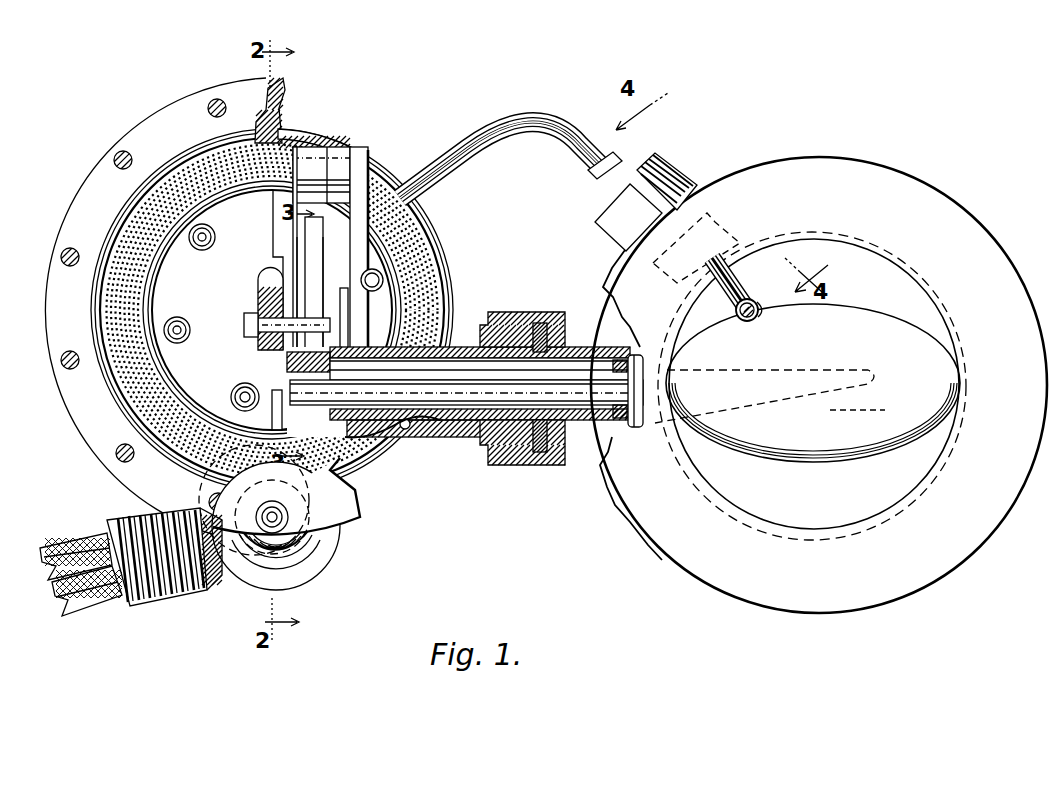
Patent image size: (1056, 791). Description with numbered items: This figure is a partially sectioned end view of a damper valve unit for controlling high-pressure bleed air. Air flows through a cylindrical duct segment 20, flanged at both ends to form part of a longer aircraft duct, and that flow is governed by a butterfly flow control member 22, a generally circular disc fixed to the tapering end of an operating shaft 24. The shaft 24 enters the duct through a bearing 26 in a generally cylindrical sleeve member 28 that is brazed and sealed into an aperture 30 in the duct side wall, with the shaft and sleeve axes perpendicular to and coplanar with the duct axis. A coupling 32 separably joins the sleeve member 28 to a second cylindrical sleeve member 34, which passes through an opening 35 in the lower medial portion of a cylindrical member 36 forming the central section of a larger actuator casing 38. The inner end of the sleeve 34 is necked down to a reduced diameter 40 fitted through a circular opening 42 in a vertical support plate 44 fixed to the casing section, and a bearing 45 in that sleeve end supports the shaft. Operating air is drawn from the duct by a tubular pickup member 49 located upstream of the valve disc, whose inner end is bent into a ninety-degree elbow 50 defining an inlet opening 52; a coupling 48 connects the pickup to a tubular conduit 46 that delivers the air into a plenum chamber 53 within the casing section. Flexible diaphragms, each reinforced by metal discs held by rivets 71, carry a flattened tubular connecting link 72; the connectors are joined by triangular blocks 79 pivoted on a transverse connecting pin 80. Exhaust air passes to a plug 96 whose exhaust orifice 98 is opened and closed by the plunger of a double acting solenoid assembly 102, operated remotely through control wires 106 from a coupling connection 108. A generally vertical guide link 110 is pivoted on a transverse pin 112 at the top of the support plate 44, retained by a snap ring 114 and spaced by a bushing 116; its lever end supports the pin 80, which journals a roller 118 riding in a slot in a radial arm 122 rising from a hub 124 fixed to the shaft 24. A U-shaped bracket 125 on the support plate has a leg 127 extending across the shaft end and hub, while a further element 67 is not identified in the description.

The cylindrical duct segment 20 is at (793, 528).
The butterfly flow control member 22 is at (917, 337).
The operating shaft 24 is at (500, 440).
The bearing 26 is at (620, 420).
The sleeve member 28 is at (618, 346).
The aperture 30 is at (686, 408).
The coupling 32 is at (549, 474).
The second cylindrical sleeve member 34 is at (466, 437).
The opening 35 is at (395, 432).
The cylindrical member 36 is at (318, 140).
The actuator casing 38 is at (466, 277).
The reduced diameter 40 is at (335, 392).
The circular opening 42 is at (362, 366).
The support plate 44 is at (362, 205).
The bearing 45 is at (406, 430).
The tubular conduit 46 is at (508, 132).
The coupling 48 is at (602, 218).
The tubular pickup member 49 is at (730, 272).
The elbow 50 is at (735, 310).
The inlet opening 52 is at (759, 316).
The plenum chamber 53 is at (214, 311).
The bolts 67 is at (61, 258).
The rivets 71 is at (195, 249).
The flattened tubular connecting link 72 is at (262, 272).
The triangular blocks 79 is at (262, 340).
The transverse connecting pin 80 is at (246, 326).
The plug 96 is at (318, 543).
The exhaust orifice 98 is at (282, 510).
The double acting solenoid assembly 102 is at (350, 530).
The control wires 106 is at (82, 545).
The coupling connection 108 is at (130, 508).
The guide link 110 is at (282, 252).
The transverse pin 112 is at (278, 192).
The snap ring 114 is at (284, 138).
The bushing 116 is at (332, 160).
The roller 118 is at (335, 290).
The radial arm 122 is at (315, 256).
The hub 124 is at (272, 420).
The U-shaped bracket 125 is at (345, 323).
The leg 127 is at (274, 392).